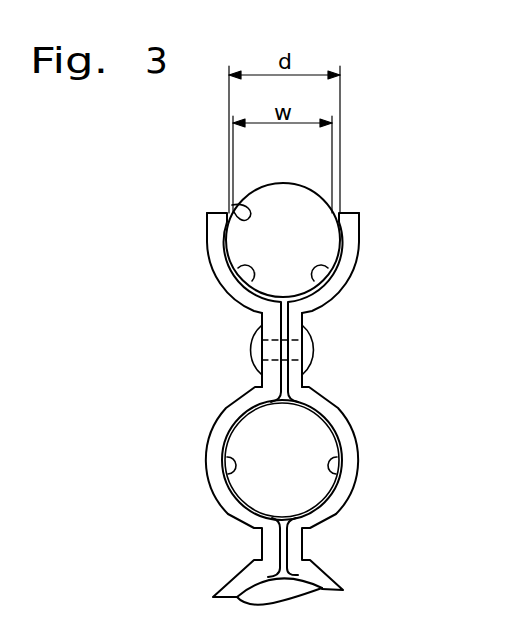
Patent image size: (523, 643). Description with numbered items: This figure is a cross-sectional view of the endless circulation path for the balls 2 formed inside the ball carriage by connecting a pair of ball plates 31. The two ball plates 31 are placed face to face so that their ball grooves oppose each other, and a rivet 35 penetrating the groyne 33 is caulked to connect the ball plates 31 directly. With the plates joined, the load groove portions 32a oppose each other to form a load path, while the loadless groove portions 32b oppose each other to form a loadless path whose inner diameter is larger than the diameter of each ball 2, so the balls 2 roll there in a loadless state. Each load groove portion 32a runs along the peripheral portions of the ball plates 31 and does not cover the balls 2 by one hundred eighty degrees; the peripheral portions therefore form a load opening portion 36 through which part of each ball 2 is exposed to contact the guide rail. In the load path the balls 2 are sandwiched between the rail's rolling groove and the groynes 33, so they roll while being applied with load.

The ball 2 is at (315, 242).
The ball plate 31 is at (222, 410).
The load groove portion 32a is at (240, 287).
The loadless groove portion 32b is at (228, 473).
The groyne 33 is at (255, 385).
The rivet 35 is at (252, 337).
The load opening portion 36 is at (232, 205).